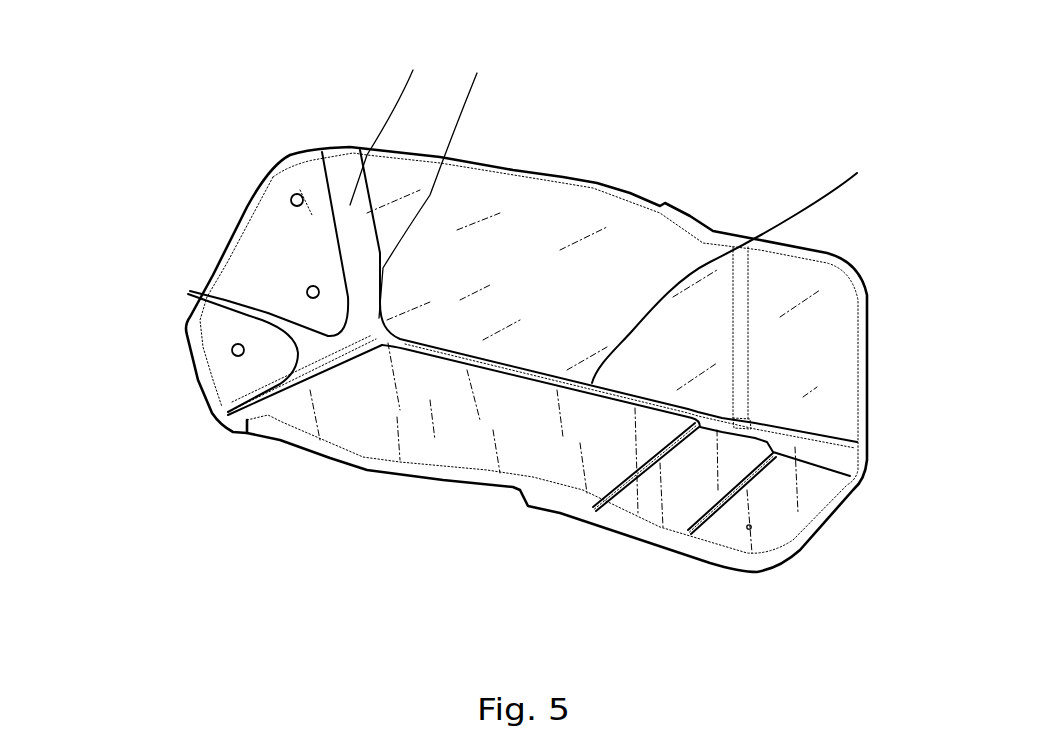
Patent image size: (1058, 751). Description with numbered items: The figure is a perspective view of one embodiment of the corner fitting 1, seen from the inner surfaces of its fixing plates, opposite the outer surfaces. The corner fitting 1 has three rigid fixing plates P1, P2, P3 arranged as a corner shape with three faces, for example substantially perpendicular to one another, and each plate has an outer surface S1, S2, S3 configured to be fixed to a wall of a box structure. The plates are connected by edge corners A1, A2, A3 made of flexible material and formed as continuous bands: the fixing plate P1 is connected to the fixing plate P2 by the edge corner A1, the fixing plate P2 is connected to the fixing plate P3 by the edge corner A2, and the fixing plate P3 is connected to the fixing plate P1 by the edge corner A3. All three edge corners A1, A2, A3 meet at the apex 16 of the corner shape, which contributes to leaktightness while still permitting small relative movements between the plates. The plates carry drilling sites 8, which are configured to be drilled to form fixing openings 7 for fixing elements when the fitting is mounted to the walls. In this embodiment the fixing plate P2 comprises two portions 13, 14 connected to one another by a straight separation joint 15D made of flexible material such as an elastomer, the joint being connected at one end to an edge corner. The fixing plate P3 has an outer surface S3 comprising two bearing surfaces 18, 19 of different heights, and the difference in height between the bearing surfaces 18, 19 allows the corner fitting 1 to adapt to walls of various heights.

The corner fitting 1 is at (753, 140).
The fixing opening 7 is at (293, 194).
The drilling site 8 is at (505, 207).
The portion 13 is at (225, 383).
The portion 14 is at (311, 195).
The straight separation joint 15D is at (223, 301).
The apex 16 is at (437, 181).
The bearing surface 18 is at (328, 460).
The bearing surface 19 is at (685, 557).
The edge corner A1 is at (388, 119).
The edge corner A2 is at (280, 440).
The edge corner A3 is at (736, 262).
The fixing plate P1 is at (543, 217).
The fixing plate P2 is at (275, 258).
The fixing plate P3 is at (448, 440).
The outer surface S1 is at (700, 204).
The outer surface S2 is at (220, 208).
The outer surface S3 is at (594, 547).